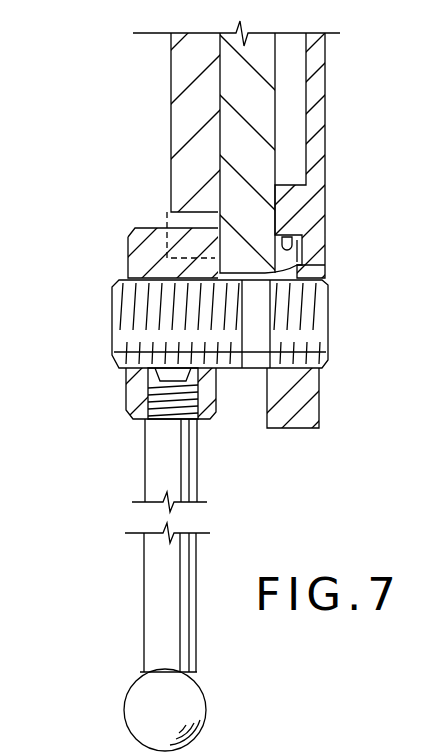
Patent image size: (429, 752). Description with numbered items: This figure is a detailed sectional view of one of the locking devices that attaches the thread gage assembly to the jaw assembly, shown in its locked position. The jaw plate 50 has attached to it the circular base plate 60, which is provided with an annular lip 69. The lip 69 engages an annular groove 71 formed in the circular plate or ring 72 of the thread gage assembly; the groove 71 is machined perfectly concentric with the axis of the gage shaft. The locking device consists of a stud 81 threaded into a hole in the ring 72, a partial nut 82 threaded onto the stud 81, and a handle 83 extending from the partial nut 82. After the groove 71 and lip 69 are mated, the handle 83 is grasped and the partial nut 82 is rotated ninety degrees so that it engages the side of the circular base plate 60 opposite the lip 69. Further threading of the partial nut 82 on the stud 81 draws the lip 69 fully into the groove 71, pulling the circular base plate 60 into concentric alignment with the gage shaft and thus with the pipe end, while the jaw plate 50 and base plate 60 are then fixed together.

The jaw plate 50 is at (188, 118).
The circular base plate 60 is at (248, 75).
The annular lip 69 is at (285, 264).
The annular groove 71 is at (304, 243).
The circular plate or ring 72 is at (313, 199).
The stud 81 is at (302, 310).
The partial nut 82 is at (135, 386).
The handle 83 is at (165, 452).